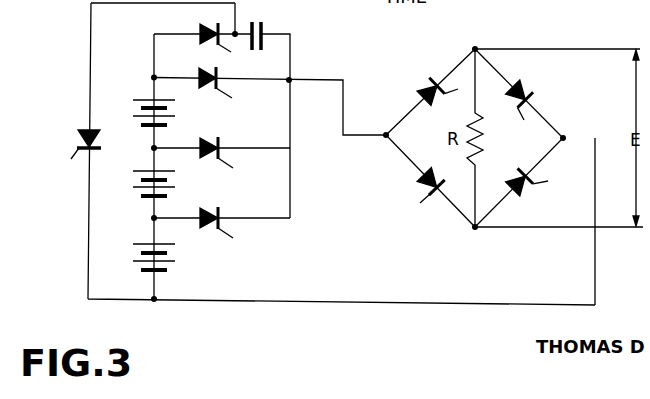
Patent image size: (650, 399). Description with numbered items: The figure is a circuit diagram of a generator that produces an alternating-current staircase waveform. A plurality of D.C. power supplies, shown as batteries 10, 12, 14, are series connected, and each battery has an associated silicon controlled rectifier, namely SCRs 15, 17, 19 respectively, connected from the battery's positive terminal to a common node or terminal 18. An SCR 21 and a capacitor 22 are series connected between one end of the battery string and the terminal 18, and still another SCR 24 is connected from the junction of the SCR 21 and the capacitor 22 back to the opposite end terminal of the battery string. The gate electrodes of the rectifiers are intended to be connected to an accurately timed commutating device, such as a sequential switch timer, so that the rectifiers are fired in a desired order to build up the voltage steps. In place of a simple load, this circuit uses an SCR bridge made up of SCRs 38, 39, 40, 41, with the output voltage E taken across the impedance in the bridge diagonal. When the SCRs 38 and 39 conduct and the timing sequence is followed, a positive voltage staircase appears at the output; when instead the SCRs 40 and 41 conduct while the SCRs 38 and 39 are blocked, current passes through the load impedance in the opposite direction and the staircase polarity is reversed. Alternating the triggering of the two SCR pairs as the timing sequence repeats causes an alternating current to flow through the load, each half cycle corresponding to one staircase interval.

The battery 10 is at (177, 260).
The battery 12 is at (177, 181).
The battery 14 is at (180, 112).
The silicon controlled rectifier 15 is at (208, 230).
The silicon controlled rectifier 17 is at (208, 158).
The terminal 18 is at (320, 80).
The silicon controlled rectifier 19 is at (206, 88).
The silicon controlled rectifier 21 is at (198, 38).
The capacitor 22 is at (270, 34).
The silicon controlled rectifier 24 is at (78, 130).
The silicon controlled rectifier 38 is at (426, 94).
The silicon controlled rectifier 39 is at (514, 194).
The silicon controlled rectifier 40 is at (520, 82).
The silicon controlled rectifier 41 is at (418, 177).